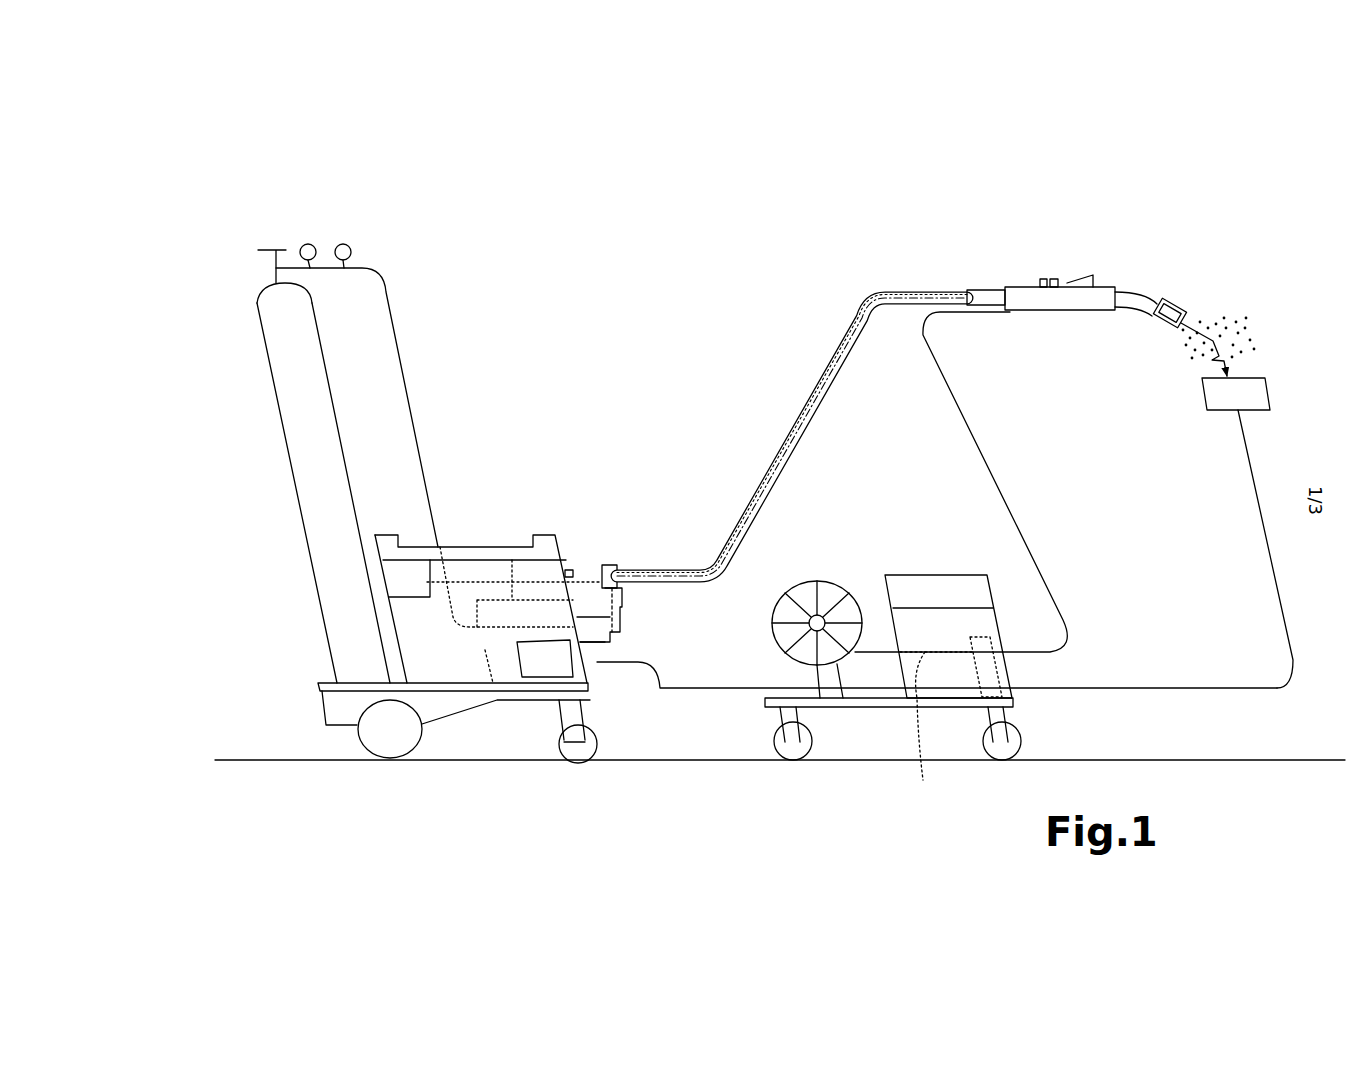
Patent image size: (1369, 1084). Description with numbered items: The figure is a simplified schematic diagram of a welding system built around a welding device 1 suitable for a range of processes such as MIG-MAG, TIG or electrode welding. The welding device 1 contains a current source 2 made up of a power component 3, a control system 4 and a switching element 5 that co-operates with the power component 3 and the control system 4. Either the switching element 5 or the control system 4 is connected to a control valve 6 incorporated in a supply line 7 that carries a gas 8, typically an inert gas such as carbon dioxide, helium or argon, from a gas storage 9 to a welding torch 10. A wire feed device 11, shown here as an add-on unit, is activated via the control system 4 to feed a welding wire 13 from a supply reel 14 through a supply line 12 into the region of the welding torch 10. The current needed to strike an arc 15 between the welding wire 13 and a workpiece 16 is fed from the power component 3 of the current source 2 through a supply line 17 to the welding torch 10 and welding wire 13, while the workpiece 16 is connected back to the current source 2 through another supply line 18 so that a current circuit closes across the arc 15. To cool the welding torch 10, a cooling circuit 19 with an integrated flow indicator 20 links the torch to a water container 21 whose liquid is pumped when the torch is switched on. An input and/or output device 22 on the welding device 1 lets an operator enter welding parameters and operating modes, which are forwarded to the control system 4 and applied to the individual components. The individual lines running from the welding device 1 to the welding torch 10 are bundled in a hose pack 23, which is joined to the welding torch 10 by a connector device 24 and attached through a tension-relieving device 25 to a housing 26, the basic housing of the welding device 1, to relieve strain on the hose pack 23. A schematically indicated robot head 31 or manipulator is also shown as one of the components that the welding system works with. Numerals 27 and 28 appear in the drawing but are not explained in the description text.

The welding device 1 is at (172, 240).
The current source 2 is at (488, 433).
The power component 3 is at (540, 663).
The control system 4 is at (487, 657).
The switching element 5 is at (602, 687).
The control valve 6 is at (607, 663).
The supply line 7 is at (900, 310).
The gas 8 is at (1187, 297).
The gas storage 9 is at (293, 352).
The welding torch 10 is at (1095, 258).
The wire feed device 11 is at (1063, 725).
The supply line 12 is at (1020, 505).
The welding wire 13 is at (1205, 310).
The supply reel 14 is at (817, 592).
The arc 15 is at (1200, 367).
The workpiece 16 is at (1245, 395).
The supply line 17 is at (843, 345).
The supply line 18 is at (1277, 565).
The cooling circuit 19 is at (745, 507).
The flow indicator 20 is at (571, 570).
The water container 21 is at (525, 570).
The input and/or output device 22 is at (550, 535).
The hose pack 23 is at (663, 570).
The connector device 24 is at (990, 297).
The tension-relieving device 25 is at (610, 565).
The housing 26 is at (624, 605).
The valve 27 is at (413, 567).
The housing 28 is at (400, 568).
The robot head 31 is at (1155, 318).